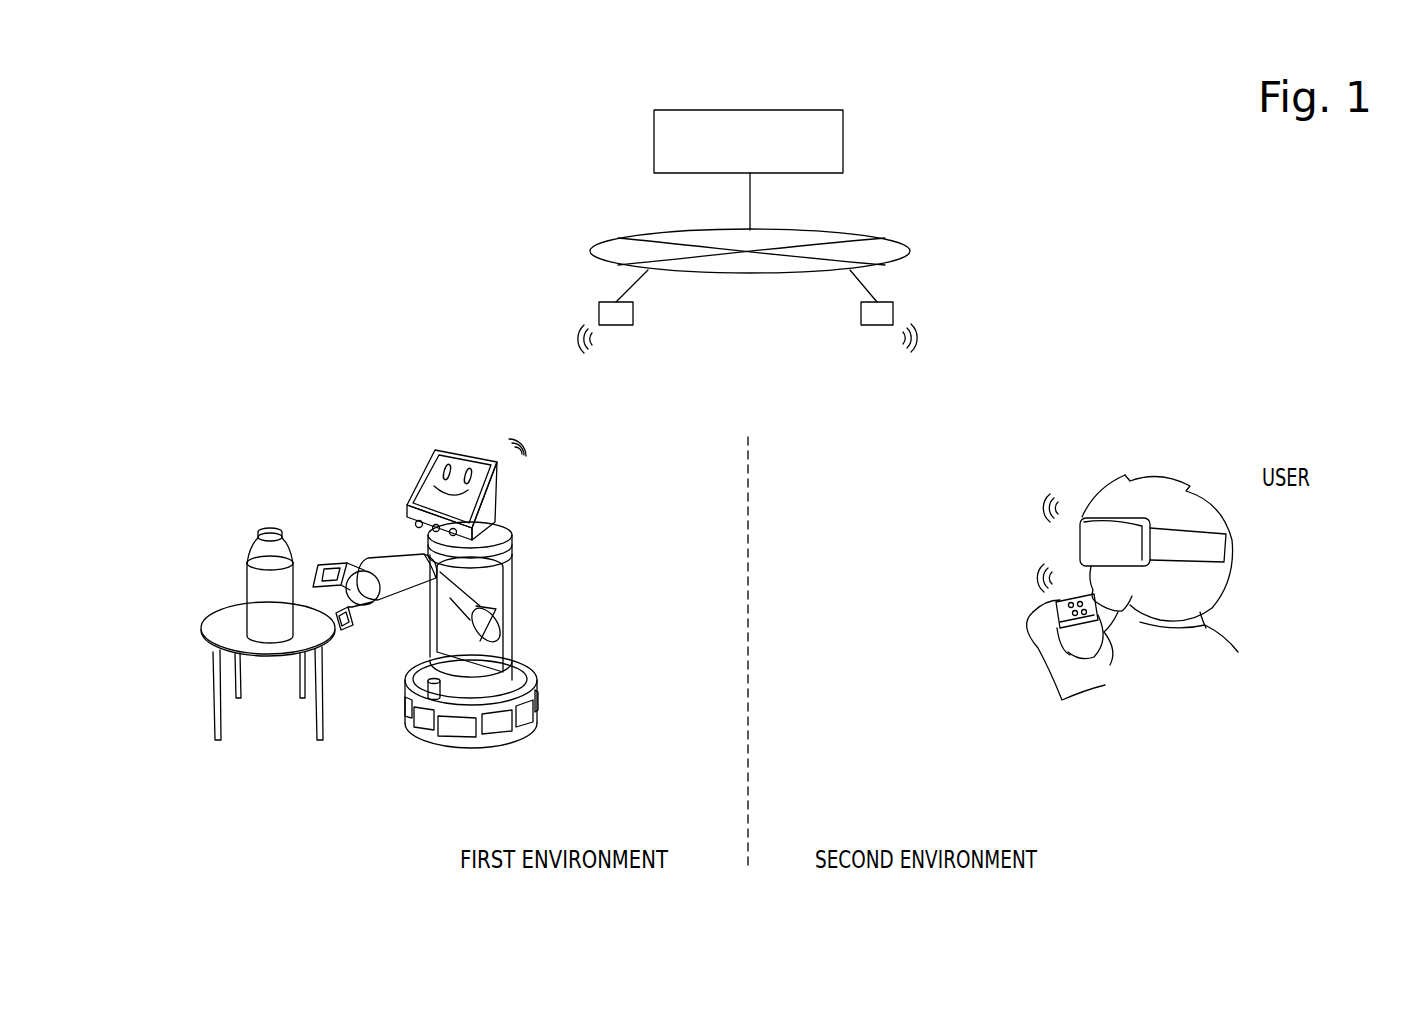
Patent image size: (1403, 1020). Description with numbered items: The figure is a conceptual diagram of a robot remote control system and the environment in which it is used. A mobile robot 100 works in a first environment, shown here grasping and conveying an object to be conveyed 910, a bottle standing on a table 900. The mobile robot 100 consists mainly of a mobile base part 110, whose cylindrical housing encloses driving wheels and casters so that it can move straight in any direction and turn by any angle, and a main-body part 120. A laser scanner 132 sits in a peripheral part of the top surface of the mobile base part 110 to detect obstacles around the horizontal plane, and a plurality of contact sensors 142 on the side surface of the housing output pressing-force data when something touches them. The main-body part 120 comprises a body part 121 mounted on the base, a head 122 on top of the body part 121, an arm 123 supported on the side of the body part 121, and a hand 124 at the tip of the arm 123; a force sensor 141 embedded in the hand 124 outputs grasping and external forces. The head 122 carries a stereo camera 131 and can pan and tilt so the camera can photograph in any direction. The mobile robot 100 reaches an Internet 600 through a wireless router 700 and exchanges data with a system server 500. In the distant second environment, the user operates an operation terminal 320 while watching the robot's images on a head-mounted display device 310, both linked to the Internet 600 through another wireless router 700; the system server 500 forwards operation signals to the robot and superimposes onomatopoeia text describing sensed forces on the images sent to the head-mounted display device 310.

The mobile robot 100 is at (388, 426).
The mobile base part 110 is at (590, 650).
The main-body part 120 is at (590, 448).
The body part 121 is at (507, 597).
The head 122 is at (493, 505).
The arm 123 is at (383, 563).
The hand 124 is at (358, 622).
The stereo camera 131 is at (440, 540).
The laser scanner 132 is at (428, 685).
The force sensor 141 is at (349, 632).
The contact sensor 142 is at (422, 722).
The head-mounted display device 310 is at (1087, 548).
The operation terminal 320 is at (1052, 600).
The system server 500 is at (659, 110).
The Internet 600 is at (912, 251).
The wireless router 700 is at (599, 306).
The table 900 is at (213, 623).
The object to be conveyed 910 is at (250, 577).